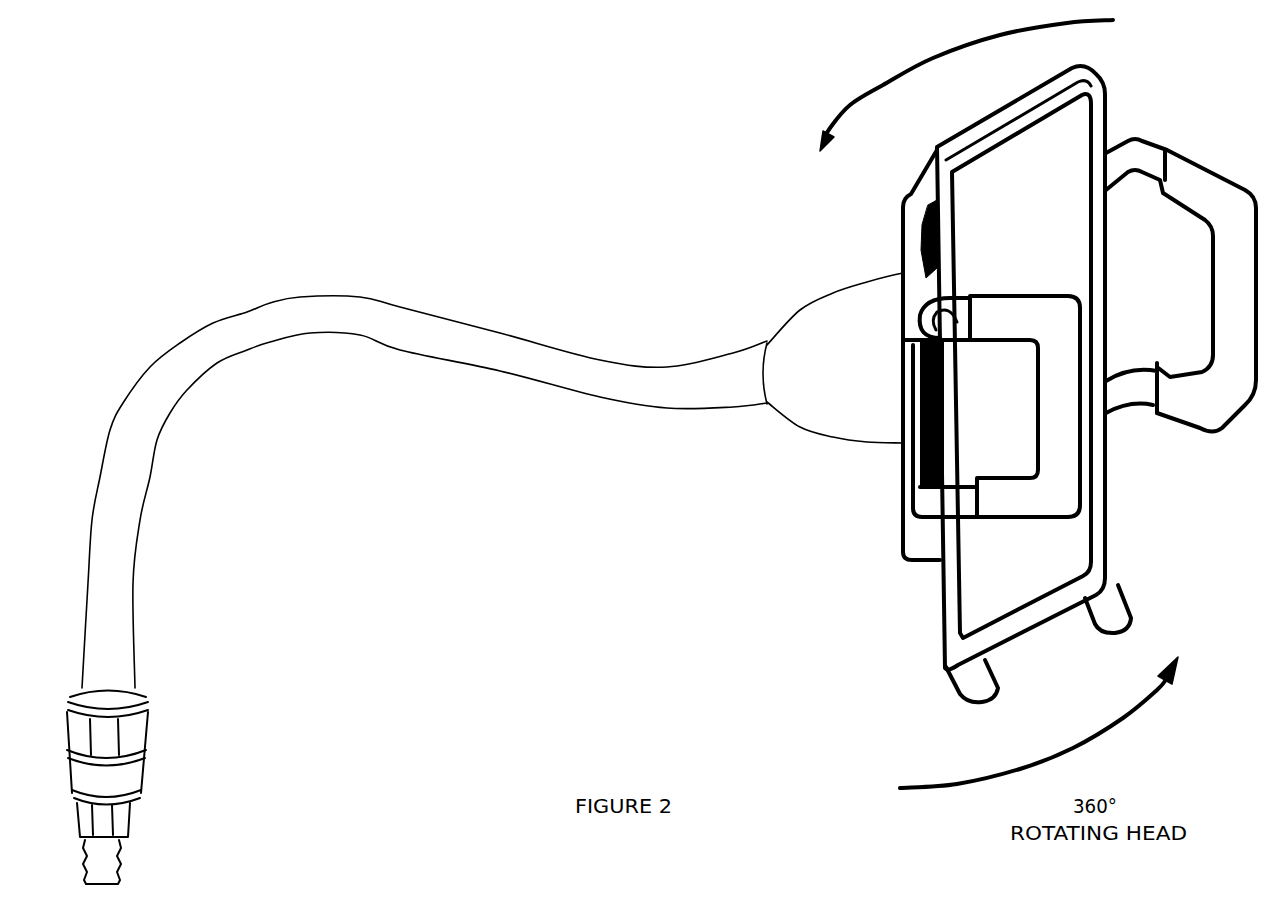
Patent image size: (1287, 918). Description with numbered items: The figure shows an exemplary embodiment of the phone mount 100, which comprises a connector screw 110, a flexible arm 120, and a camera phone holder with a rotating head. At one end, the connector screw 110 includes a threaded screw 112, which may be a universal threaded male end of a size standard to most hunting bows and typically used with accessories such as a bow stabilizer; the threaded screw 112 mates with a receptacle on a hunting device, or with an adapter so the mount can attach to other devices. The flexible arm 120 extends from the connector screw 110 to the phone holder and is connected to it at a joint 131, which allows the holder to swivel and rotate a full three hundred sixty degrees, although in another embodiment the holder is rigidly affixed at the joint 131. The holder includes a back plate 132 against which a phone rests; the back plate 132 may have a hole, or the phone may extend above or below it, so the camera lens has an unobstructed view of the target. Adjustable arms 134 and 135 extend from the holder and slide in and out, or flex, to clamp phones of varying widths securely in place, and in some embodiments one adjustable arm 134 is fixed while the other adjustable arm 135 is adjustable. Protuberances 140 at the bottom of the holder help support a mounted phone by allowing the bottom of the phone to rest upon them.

The phone mount 100 is at (232, 268).
The connector screw 110 is at (262, 772).
The threaded screw 112 is at (100, 741).
The flexible arm 120 is at (430, 332).
The joint 131 is at (835, 365).
The back plate 132 is at (1033, 185).
The adjustable arm 134 is at (1178, 397).
The adjustable arm 135 is at (1030, 488).
The protuberances 140 is at (1108, 638).